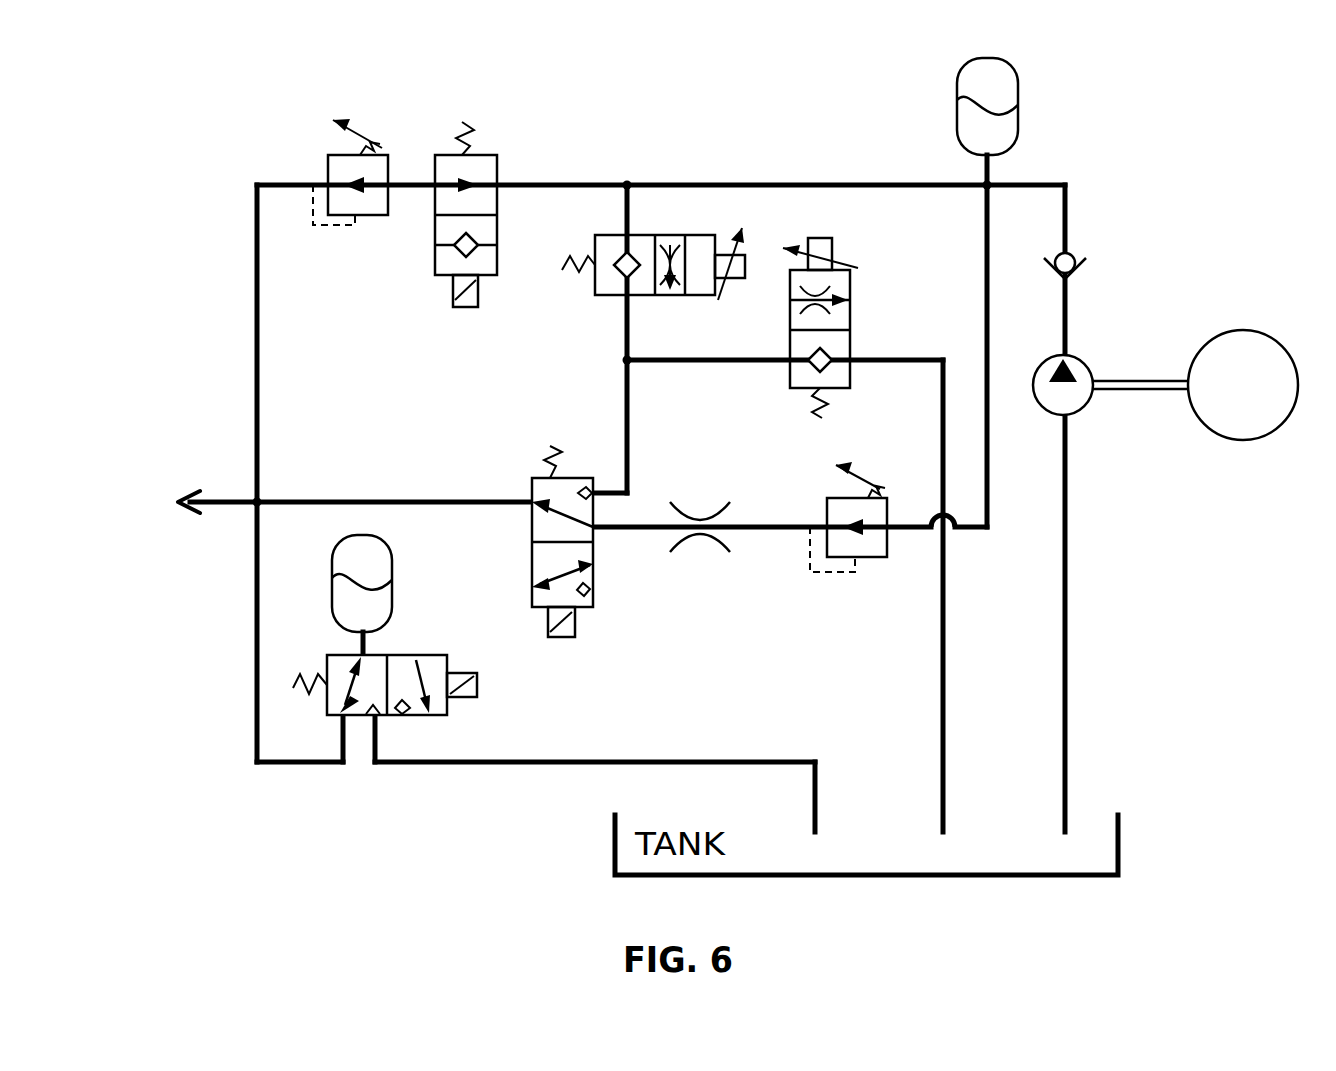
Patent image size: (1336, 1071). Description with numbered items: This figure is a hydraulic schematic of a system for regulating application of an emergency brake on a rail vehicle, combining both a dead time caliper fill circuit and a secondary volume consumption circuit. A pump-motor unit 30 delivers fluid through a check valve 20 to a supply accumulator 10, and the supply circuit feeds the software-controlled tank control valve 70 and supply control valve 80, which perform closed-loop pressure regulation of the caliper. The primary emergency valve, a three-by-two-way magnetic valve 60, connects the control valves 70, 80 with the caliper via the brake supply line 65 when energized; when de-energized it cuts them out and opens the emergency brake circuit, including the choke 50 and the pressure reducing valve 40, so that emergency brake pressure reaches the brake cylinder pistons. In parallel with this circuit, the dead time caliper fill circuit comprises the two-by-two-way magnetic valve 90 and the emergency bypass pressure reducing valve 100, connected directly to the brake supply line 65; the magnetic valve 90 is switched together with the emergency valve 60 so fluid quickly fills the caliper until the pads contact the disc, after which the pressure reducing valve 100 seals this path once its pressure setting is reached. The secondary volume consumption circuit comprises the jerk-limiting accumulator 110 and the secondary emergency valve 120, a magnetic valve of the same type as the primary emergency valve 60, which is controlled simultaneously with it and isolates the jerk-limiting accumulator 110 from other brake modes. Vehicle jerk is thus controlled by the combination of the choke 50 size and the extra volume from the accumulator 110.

The supply accumulator 10 is at (990, 93).
The check valve 20 is at (1078, 250).
The pump-motor unit 30 is at (1153, 402).
The pressure reducing valve 40 is at (868, 545).
The choke 50 is at (700, 514).
The 3/2-way magnetic valve 60 is at (537, 472).
The brake supply line 65 is at (220, 508).
The tank control valve 70 is at (835, 305).
The supply control valve 80 is at (612, 275).
The 2/2-way magnetic valve 90 is at (450, 262).
The pressure reducing valve 100 is at (378, 210).
The jerk-limiting accumulator 110 is at (379, 556).
The 3/2-way magnetic valve 120 is at (432, 670).